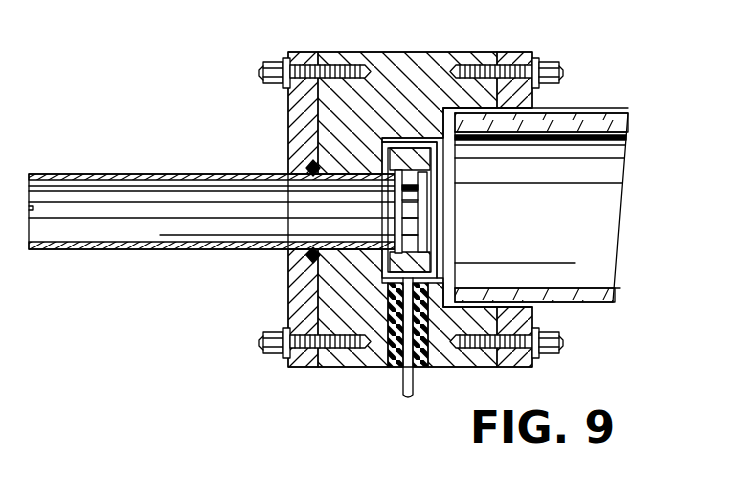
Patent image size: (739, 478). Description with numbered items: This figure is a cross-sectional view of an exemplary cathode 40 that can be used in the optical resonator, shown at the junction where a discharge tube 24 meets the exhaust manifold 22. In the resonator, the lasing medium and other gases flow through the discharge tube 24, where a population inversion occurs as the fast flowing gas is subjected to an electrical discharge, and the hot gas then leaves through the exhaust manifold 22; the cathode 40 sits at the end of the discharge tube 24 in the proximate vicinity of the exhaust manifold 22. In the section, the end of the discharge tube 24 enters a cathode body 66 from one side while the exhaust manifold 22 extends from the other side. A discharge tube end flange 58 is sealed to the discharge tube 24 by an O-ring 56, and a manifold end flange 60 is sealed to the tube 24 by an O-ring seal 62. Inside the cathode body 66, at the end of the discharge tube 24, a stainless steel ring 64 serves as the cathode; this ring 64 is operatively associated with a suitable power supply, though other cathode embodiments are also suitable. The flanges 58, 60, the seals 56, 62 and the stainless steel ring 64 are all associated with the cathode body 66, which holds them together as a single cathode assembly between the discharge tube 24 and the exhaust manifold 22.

The exhaust manifold 22 is at (594, 113).
The discharge tube 24 is at (65, 174).
The cathode 40 is at (136, 108).
The O-ring 56 is at (313, 170).
The discharge tube end flange 58 is at (310, 52).
The manifold end flange 60 is at (512, 52).
The O-ring seal 62 is at (500, 307).
The stainless steel ring 64 is at (430, 162).
The cathode body 66 is at (400, 52).